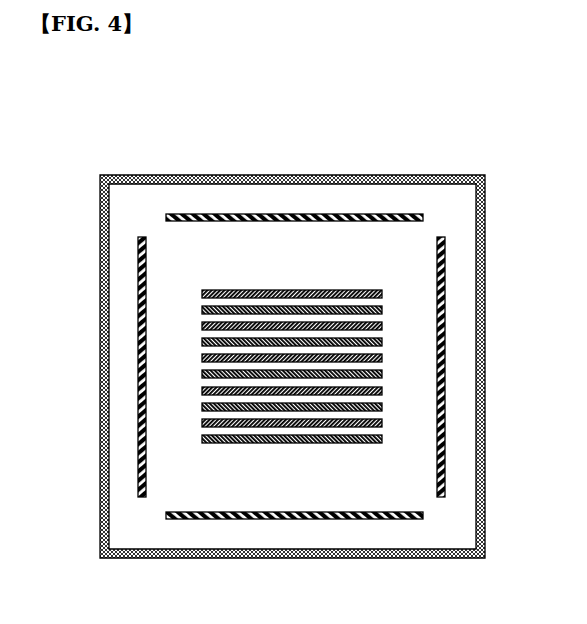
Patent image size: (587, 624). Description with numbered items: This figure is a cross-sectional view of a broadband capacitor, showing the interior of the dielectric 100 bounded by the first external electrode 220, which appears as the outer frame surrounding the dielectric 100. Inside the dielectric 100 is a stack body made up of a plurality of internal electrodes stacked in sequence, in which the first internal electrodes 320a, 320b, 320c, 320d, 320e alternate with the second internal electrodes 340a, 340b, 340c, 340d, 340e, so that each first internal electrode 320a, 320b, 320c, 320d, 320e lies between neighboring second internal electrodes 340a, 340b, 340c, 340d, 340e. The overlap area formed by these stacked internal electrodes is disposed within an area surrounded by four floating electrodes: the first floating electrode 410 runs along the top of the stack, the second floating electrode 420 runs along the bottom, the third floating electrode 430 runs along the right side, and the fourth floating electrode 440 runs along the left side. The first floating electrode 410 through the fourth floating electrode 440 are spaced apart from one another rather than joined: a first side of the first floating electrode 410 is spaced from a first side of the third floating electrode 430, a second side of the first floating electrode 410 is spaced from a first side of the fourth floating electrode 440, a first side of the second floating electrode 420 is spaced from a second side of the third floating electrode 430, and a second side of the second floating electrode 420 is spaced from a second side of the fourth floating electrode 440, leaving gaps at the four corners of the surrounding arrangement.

The dielectric 100 is at (190, 176).
The first external electrode 220 is at (428, 176).
The first floating electrode 410 is at (342, 214).
The second floating electrode 420 is at (305, 519).
The third floating electrode 430 is at (446, 250).
The fourth floating electrode 440 is at (138, 489).
The first internal electrode 320a is at (201, 310).
The first internal electrode 320b is at (201, 342).
The first internal electrode 320c is at (201, 374).
The first internal electrode 320d is at (201, 407).
The first internal electrode 320e is at (201, 439).
The second internal electrode 340a is at (383, 294).
The second internal electrode 340b is at (383, 326).
The second internal electrode 340c is at (383, 358).
The second internal electrode 340d is at (383, 391).
The second internal electrode 340e is at (383, 423).